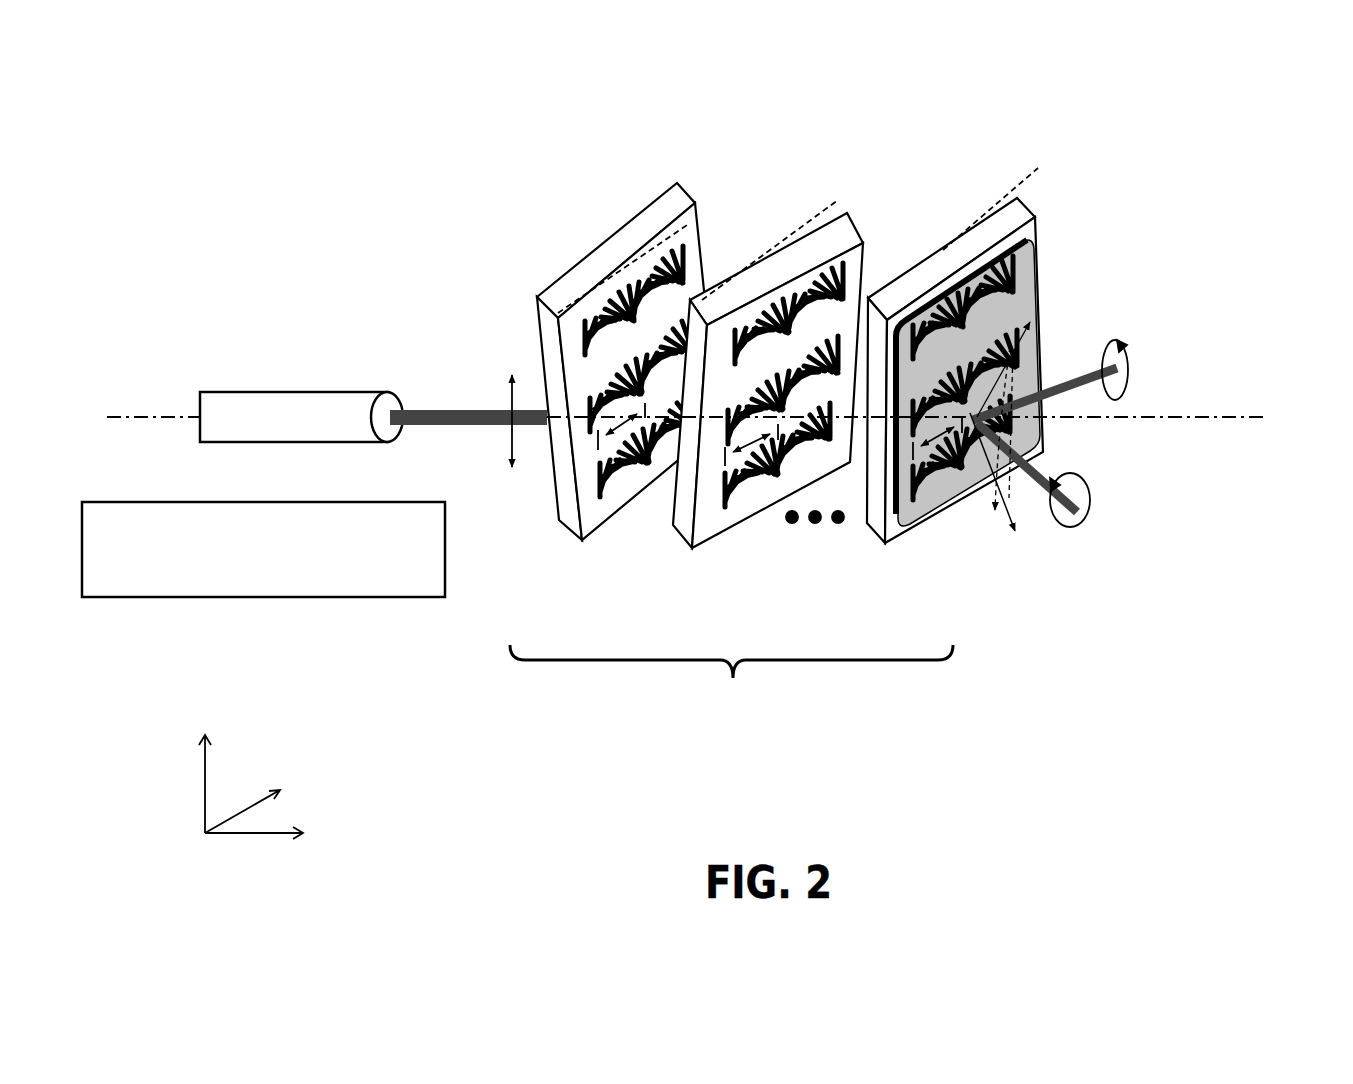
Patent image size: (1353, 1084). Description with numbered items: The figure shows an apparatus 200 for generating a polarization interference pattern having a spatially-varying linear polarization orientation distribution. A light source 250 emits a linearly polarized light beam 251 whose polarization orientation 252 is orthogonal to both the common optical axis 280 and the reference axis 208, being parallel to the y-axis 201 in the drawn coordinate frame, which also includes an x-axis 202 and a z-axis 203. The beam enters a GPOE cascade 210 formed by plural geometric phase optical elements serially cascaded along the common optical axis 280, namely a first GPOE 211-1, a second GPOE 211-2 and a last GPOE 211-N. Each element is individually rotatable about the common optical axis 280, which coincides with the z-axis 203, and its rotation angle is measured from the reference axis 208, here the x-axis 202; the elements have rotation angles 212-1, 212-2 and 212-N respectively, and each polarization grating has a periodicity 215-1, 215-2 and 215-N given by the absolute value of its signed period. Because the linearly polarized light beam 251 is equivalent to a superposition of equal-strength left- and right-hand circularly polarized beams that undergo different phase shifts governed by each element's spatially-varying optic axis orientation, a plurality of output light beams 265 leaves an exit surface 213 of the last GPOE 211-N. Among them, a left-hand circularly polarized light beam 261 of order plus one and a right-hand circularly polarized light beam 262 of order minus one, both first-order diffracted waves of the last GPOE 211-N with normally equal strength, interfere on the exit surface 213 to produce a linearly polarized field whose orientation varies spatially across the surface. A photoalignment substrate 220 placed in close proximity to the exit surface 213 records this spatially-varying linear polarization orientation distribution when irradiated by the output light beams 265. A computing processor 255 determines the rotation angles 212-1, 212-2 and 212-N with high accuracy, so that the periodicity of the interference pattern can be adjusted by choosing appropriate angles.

The apparatus 200 is at (278, 175).
The y-axis 201 is at (200, 777).
The x-axis 202 is at (260, 798).
The z-axis 203 is at (265, 835).
The reference axis 208 is at (630, 266).
The GPOE cascade 210 is at (731, 673).
The first GPOE 211-1 is at (627, 243).
The second GPOE 211-2 is at (827, 250).
The last GPOE 211-N is at (998, 220).
The rotation angle φ1 212-1 is at (680, 232).
The rotation angle φ2 212-2 is at (831, 212).
The rotation angle φN 212-N is at (1032, 206).
The exit surface 213 is at (1026, 240).
The periodicity of first PG 215-1 is at (620, 430).
The periodicity of second PG 215-2 is at (738, 453).
The periodicity of Nth PG 215-N is at (925, 458).
The photoalignment substrate 220 is at (948, 500).
The light source 250 is at (278, 403).
The LP light beam 251 is at (480, 410).
The polarization orientation 252 is at (510, 447).
The computing processor 255 is at (403, 590).
The LHCP light beam 261 is at (1047, 485).
The RHCP light beam 262 is at (1073, 373).
The plurality of output light beams 265 is at (1010, 493).
The common optical axis 280 is at (1248, 420).